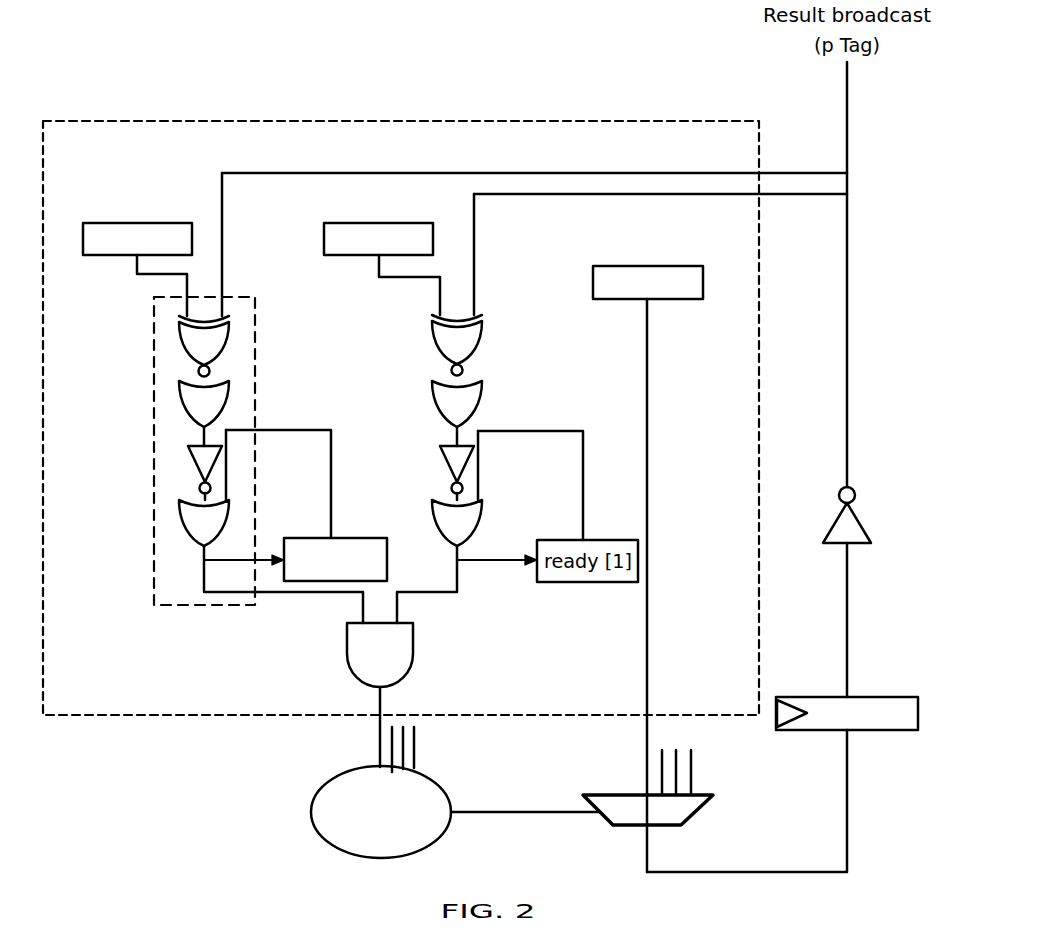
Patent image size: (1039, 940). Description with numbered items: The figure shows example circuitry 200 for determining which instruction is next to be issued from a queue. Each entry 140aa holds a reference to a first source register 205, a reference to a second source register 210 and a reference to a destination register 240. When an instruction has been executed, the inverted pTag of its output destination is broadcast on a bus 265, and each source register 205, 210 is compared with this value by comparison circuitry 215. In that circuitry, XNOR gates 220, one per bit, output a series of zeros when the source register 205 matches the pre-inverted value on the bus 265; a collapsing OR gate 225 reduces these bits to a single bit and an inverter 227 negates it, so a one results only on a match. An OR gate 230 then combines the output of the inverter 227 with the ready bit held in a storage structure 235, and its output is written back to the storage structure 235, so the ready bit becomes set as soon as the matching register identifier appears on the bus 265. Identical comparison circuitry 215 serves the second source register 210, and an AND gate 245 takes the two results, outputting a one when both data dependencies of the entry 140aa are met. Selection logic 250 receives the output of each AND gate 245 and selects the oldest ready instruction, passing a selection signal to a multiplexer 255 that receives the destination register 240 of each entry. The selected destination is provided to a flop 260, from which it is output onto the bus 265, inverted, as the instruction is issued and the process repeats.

The entry 140aa is at (470, 121).
The circuitry 200 is at (858, 345).
The first source register 205 is at (108, 257).
The second source register 210 is at (324, 238).
The comparison circuitry 215 is at (154, 518).
The XNOR gates 220 is at (231, 328).
The collapsing OR gate 225 is at (230, 390).
The inverter 227 is at (196, 462).
The OR gate 230 is at (228, 516).
The storage structure 235 is at (368, 520).
The destination register 240 is at (607, 300).
The AND gate 245 is at (347, 641).
The selection logic 250 is at (312, 808).
The multiplexer 255 is at (604, 820).
The flop 260 is at (877, 731).
The bus 265 is at (848, 565).